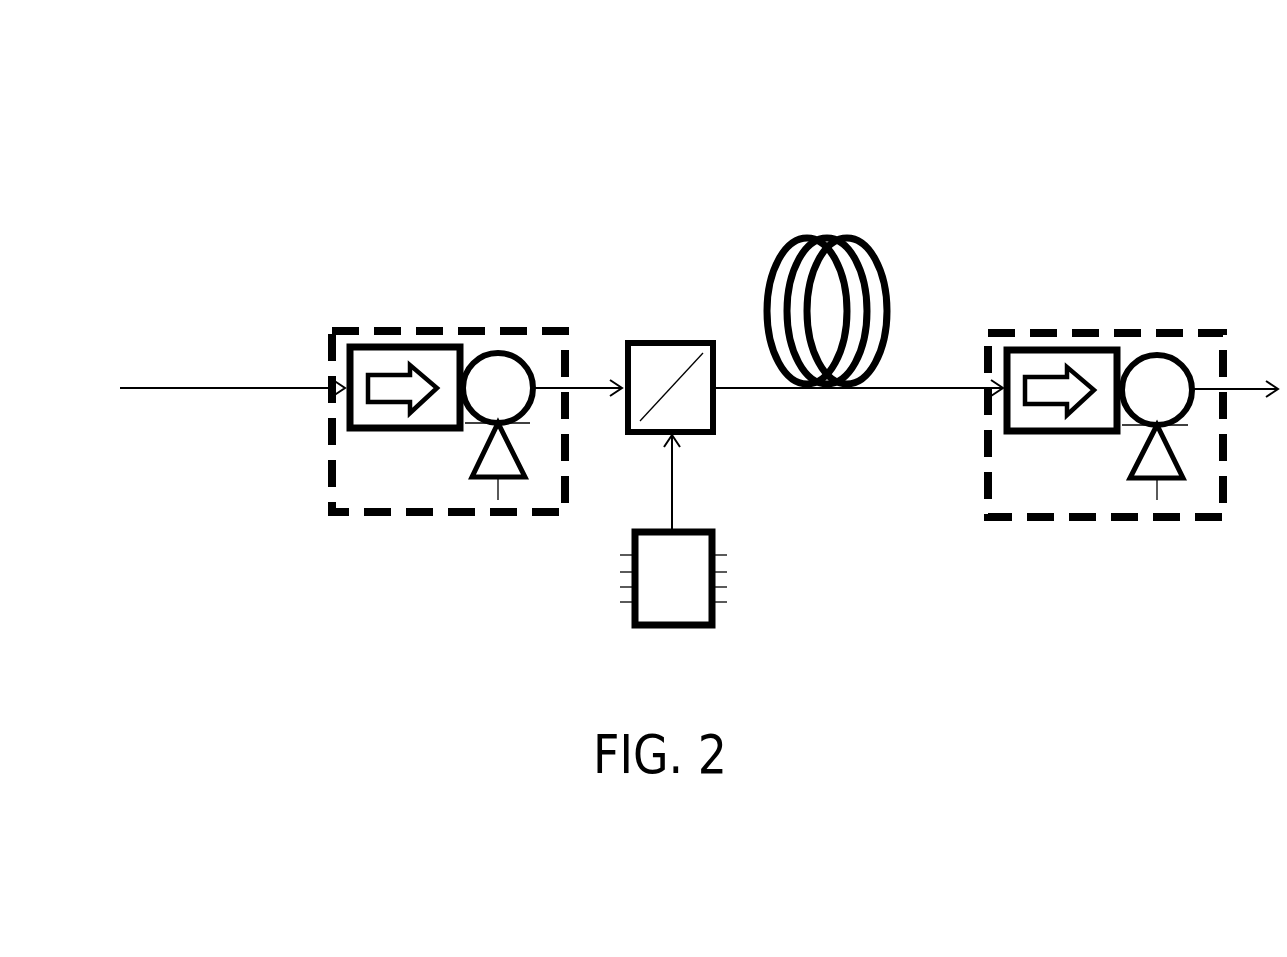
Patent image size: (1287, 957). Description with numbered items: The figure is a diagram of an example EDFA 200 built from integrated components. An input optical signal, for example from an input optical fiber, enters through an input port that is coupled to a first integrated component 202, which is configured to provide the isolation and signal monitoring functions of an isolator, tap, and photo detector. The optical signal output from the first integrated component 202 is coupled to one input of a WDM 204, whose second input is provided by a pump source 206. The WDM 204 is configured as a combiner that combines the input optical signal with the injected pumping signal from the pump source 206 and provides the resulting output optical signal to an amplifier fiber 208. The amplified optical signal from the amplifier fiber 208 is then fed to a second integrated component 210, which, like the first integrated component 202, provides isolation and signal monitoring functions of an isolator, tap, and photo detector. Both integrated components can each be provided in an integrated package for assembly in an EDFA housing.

The EDFA 200 is at (218, 93).
The first integrated component 202 is at (326, 323).
The WDM 204 is at (612, 334).
The pump source 206 is at (618, 616).
The amplifier fiber 208 is at (786, 230).
The second integrated component 210 is at (984, 322).